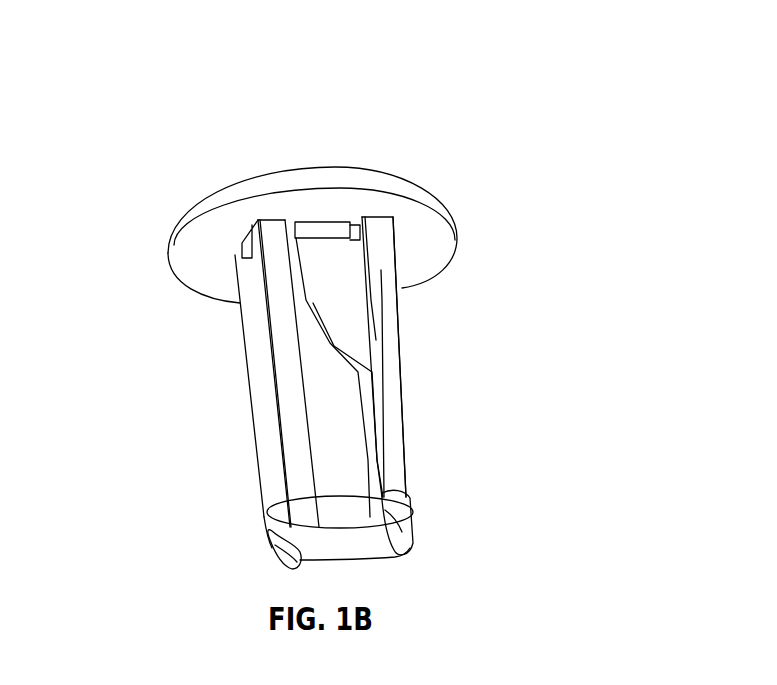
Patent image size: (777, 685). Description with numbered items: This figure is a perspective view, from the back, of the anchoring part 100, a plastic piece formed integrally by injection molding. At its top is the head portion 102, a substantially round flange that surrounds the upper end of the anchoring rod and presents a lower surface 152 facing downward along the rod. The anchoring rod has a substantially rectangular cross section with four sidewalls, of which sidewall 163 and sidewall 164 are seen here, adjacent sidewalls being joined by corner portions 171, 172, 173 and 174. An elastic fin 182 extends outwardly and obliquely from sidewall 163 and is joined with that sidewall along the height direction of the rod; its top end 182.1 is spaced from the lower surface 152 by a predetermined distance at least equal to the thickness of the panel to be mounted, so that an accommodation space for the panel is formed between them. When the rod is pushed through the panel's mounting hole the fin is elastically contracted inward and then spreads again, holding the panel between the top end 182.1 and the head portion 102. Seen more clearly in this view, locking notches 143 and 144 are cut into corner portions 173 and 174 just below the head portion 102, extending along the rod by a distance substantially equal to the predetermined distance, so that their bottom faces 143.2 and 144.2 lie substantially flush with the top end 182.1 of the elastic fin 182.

The anchoring part 100 is at (413, 137).
The head portion 102 is at (432, 195).
The lower surface 152 is at (423, 212).
The locking notch 144 is at (166, 373).
The bottom face of locking notch 144.2 is at (240, 255).
The corner portion 174 is at (270, 360).
The locking notch 143 is at (469, 357).
The bottom face of locking notch 143.2 is at (400, 240).
The top end of elastic fin 182.1 is at (297, 239).
The elastic fin 182 is at (347, 315).
The corner portion 173 is at (397, 380).
The sidewall 163 is at (348, 473).
The sidewall 164 is at (257, 467).
The corner portion 171 is at (270, 557).
The corner portion 172 is at (413, 543).